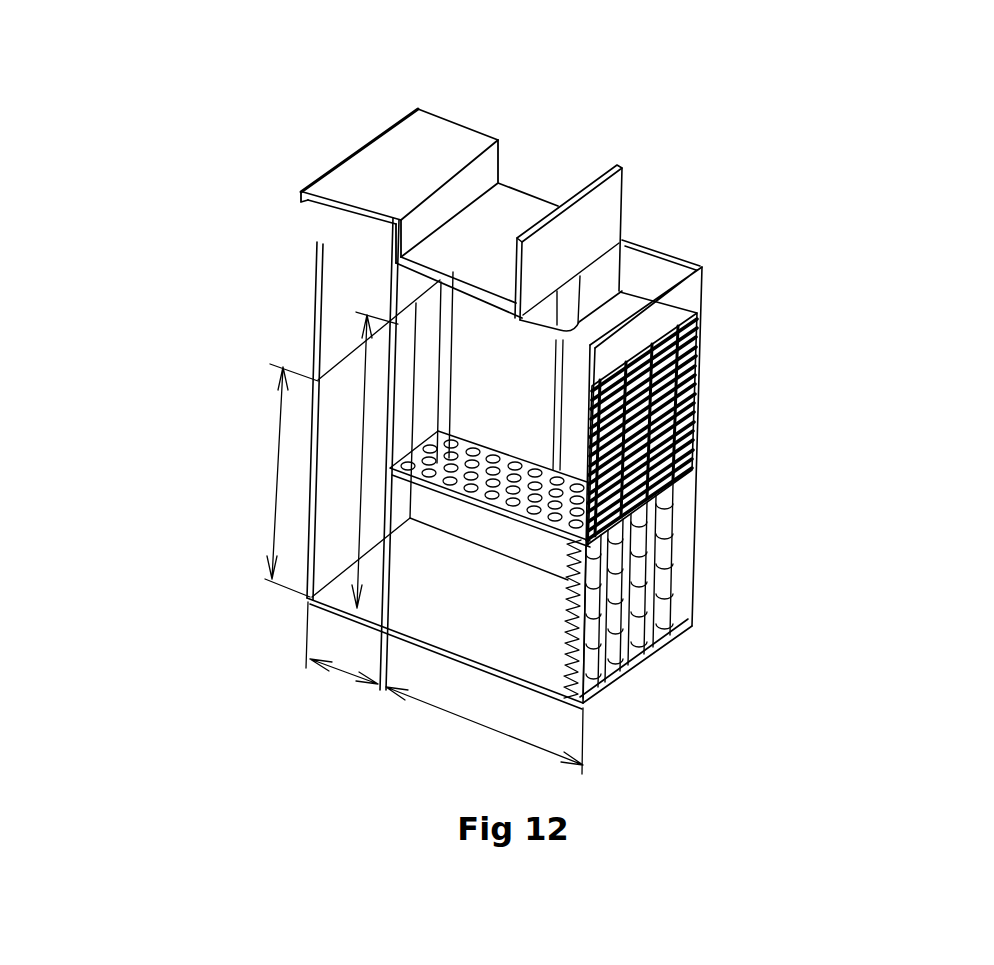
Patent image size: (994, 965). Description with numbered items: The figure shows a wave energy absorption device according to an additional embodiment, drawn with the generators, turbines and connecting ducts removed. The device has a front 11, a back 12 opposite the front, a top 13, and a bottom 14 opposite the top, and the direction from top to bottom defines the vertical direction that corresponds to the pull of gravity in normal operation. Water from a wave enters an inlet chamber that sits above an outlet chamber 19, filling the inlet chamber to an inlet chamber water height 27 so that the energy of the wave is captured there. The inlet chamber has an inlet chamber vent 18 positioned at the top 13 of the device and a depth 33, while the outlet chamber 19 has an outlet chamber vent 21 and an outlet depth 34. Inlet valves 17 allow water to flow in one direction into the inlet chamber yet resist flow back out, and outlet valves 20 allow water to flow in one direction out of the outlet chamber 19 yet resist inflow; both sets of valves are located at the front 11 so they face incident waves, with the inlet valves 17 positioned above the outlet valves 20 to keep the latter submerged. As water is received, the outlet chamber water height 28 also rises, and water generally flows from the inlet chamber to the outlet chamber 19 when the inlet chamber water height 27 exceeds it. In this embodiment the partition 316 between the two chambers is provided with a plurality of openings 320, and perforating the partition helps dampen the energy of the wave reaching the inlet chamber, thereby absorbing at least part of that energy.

The front 11 is at (770, 413).
The back 12 is at (203, 315).
The top 13 is at (462, 103).
The bottom 14 is at (415, 718).
The inlet valves 17 is at (668, 386).
The inlet chamber vent 18 is at (642, 282).
The outlet chamber 19 is at (497, 612).
The outlet valves 20 is at (656, 597).
The outlet chamber vent 21 is at (358, 261).
The inlet chamber water height 27 is at (363, 460).
The outlet chamber water height 28 is at (280, 480).
The depth 33 is at (484, 728).
The outlet depth 34 is at (342, 643).
The partition 316 is at (513, 507).
The openings 320 is at (663, 516).